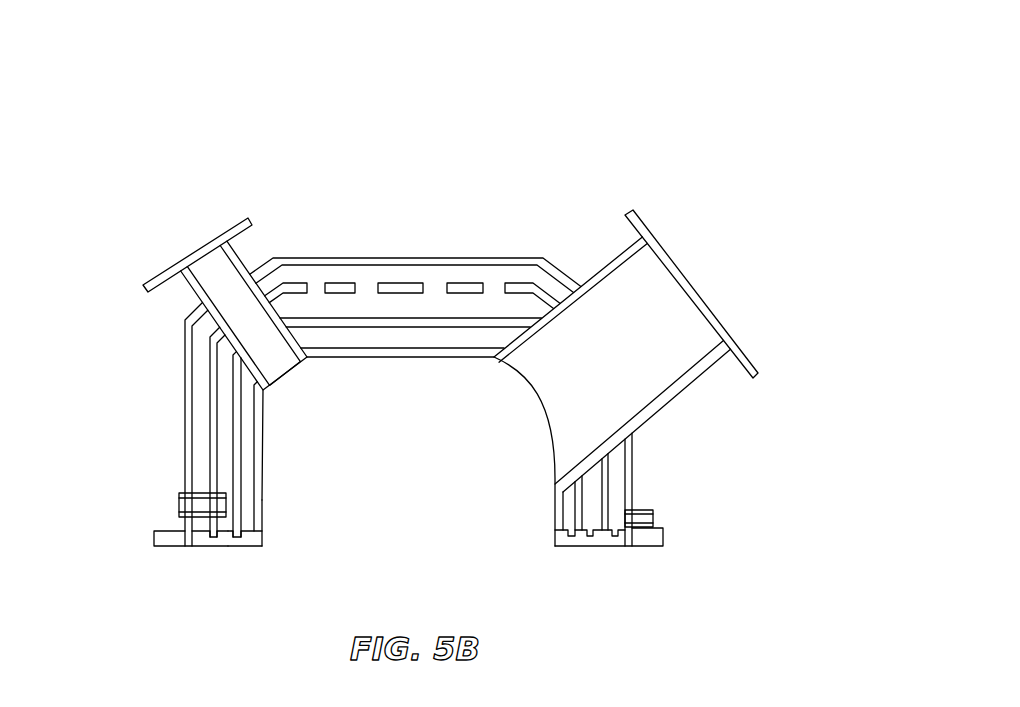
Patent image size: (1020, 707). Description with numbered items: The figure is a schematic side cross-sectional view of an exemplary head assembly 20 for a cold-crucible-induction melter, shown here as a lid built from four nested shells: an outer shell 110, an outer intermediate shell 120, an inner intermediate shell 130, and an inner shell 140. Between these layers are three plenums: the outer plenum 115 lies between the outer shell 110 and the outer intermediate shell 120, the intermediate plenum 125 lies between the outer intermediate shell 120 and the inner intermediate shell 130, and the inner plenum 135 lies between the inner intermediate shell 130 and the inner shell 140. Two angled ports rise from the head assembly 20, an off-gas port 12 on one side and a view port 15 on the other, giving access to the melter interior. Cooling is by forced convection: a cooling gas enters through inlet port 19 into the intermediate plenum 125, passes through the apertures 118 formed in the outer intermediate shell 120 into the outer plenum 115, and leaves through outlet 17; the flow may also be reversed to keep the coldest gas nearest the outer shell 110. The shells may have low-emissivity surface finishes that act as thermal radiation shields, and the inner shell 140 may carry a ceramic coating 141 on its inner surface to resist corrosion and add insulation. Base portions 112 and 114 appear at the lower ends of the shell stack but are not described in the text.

The head assembly 20 is at (675, 105).
The off-gas port 12 is at (650, 222).
The view port 15 is at (202, 243).
The outer plenum 115 is at (298, 273).
The apertures 118 is at (493, 285).
The intermediate plenum 125 is at (402, 303).
The inner plenum 135 is at (453, 337).
The outer shell 110 is at (185, 373).
The outer intermediate shell 120 is at (210, 432).
The inner intermediate shell 130 is at (232, 478).
The inner shell 140 is at (262, 470).
The ceramic coating 141 is at (262, 522).
The inlet port 19 is at (180, 498).
The outlet 17 is at (647, 507).
The base 112 is at (167, 540).
The base portion 114 is at (229, 540).